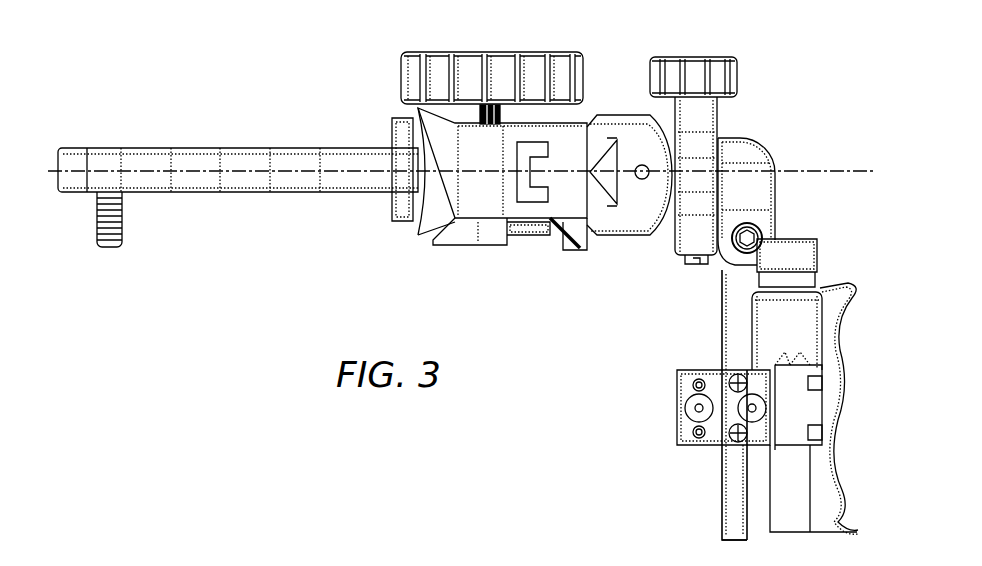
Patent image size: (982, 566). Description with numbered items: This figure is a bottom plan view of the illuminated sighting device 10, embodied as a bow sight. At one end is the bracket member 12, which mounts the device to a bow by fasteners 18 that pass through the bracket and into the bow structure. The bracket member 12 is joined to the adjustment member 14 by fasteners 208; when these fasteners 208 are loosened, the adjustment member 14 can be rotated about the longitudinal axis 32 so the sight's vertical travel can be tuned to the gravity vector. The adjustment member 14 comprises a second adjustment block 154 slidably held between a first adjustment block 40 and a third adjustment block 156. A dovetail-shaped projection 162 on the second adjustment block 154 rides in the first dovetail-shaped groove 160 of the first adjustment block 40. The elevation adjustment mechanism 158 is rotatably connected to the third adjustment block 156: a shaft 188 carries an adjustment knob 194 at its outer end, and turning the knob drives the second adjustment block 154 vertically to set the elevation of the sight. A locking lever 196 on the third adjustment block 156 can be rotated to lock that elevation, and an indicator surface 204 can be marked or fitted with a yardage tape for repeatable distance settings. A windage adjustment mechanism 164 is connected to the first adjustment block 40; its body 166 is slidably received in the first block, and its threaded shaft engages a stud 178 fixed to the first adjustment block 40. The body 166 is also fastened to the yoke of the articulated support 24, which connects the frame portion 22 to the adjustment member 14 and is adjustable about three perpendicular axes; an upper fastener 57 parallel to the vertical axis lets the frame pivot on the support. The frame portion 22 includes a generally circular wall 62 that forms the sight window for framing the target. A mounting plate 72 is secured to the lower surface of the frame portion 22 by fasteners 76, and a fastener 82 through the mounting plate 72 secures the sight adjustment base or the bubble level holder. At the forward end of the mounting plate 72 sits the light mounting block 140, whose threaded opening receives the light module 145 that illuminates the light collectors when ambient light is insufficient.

The illuminated sighting device 10 is at (263, 67).
The bracket member 12 is at (263, 147).
The adjustment member 14 is at (412, 233).
The fasteners 18 is at (124, 227).
The frame portion 22 is at (748, 494).
The articulated support 24 is at (765, 144).
The longitudinal axis 32 is at (762, 198).
The first adjustment block 40 is at (628, 212).
The upper fastener 57 is at (763, 227).
The circular wall 62 is at (830, 565).
The mounting plate 72 is at (680, 386).
The fasteners 76 is at (737, 372).
The fastener 82 is at (698, 408).
The light mounting block 140 is at (810, 320).
The light module 145 is at (805, 258).
The second adjustment block 154 is at (572, 218).
The third adjustment block 156 is at (475, 200).
The elevation adjustment mechanism 158 is at (557, 33).
The first dovetail-shaped groove 160 is at (630, 160).
The dovetail-shaped projection 162 is at (610, 160).
The windage adjustment mechanism 164 is at (697, 62).
The body 166 is at (688, 230).
The stud 178 is at (650, 163).
The shaft 188 is at (480, 115).
The adjustment knob 194 is at (413, 80).
The locking lever 196 is at (490, 247).
The indicator surface 204 is at (568, 235).
The fasteners 208 is at (402, 141).